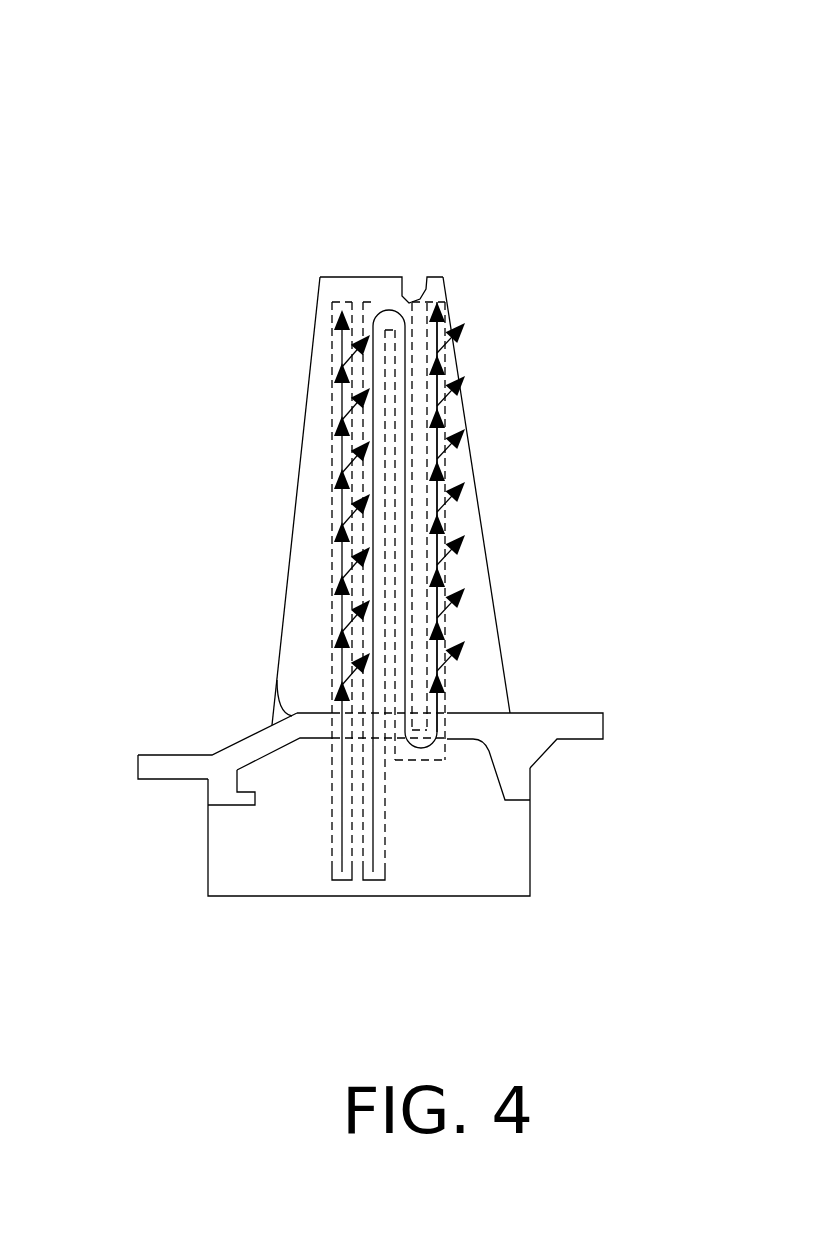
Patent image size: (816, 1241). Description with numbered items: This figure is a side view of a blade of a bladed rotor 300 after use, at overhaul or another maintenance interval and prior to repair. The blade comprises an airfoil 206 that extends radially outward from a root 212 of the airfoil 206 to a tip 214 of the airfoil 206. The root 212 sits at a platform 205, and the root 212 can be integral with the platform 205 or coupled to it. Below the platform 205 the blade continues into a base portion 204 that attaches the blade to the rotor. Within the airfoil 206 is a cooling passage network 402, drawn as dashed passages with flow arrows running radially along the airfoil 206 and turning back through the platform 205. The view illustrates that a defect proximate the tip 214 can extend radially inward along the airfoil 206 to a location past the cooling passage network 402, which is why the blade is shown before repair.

The bladed rotor 300 is at (140, 122).
The airfoil 206 is at (312, 508).
The tip 214 is at (340, 277).
The cooling passage network 402 is at (281, 591).
The root 212 is at (273, 718).
The platform 205 is at (542, 743).
The root 204 is at (417, 856).